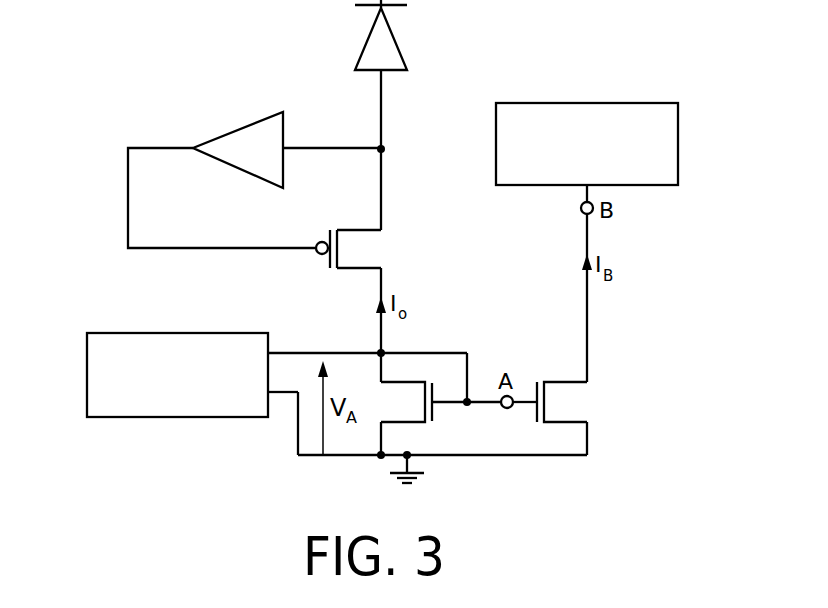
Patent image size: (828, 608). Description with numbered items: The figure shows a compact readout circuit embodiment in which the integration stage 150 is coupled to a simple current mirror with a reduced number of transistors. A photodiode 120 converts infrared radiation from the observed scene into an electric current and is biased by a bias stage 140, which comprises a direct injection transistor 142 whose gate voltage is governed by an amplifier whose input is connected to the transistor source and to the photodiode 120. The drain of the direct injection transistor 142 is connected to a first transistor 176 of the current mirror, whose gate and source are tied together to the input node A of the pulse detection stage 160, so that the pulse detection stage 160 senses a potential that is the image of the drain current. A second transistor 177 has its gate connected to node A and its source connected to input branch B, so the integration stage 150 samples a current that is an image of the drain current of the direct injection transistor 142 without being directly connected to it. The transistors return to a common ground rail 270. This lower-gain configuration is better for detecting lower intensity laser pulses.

The photodiode 120 is at (387, 44).
The bias stage 140 is at (125, 137).
The direct injection transistor 142 is at (376, 245).
The integration stage 150 is at (645, 185).
The pulse detection stage 160 is at (117, 417).
The first transistor 176 is at (443, 339).
The second transistor 177 is at (589, 395).
The ground rail / reference node 270 is at (589, 468).